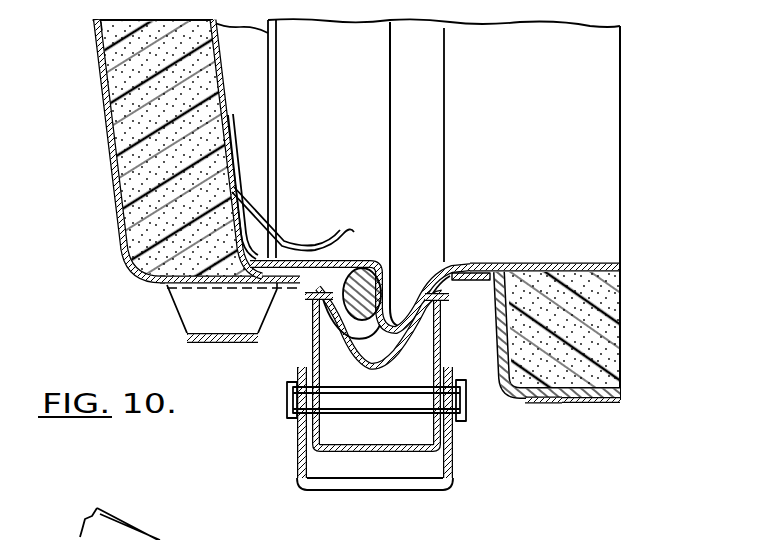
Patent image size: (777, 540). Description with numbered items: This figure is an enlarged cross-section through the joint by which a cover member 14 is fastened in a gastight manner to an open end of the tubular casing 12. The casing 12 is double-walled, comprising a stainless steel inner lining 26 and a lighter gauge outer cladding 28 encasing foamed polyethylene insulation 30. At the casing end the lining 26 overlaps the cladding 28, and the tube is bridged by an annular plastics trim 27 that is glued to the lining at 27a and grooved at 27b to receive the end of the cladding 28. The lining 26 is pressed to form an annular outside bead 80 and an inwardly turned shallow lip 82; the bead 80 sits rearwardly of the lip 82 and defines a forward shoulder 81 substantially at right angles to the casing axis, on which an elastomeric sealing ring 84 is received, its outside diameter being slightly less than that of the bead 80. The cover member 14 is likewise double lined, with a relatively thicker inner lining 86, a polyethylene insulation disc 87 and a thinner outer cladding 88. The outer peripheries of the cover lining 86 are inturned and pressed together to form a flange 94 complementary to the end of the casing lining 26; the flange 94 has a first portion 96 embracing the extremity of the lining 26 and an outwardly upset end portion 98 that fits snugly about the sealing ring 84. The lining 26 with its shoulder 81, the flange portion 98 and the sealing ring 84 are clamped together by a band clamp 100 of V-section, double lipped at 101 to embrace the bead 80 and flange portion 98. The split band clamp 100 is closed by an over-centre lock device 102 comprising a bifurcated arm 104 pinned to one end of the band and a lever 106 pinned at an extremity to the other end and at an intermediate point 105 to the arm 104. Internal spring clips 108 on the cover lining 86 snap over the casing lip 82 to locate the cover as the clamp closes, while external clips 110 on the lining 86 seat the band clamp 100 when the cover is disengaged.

The casing 12 is at (609, 198).
The cover member 14 is at (98, 181).
The inner lining 26 is at (530, 262).
The annular plastics trim 27 is at (513, 397).
The glued portion of trim 27a is at (513, 231).
The groove of trim 27b is at (555, 404).
The outer cladding 28 is at (612, 403).
The foamed polyethylene insulation 30 is at (557, 282).
The annular outside bead 80 is at (408, 302).
The forward shoulder 81 is at (398, 300).
The inwardly turned shallow lip 82 is at (263, 248).
The elastomeric sealing ring 84 is at (352, 278).
The inner lining of cover member 86 is at (213, 42).
The polyethylene insulation disc 87 is at (128, 81).
The outer cladding of cover member 88 is at (105, 110).
The flange 94 is at (365, 372).
The first portion of flange 96 is at (283, 302).
The outwardly upset end portion 98 is at (330, 300).
The band clamp 100 is at (441, 330).
The double lips of band clamp 101 is at (452, 262).
The over-centre lock device 102 is at (324, 492).
The bifurcated arm 104 is at (452, 468).
The intermediate point 105 is at (372, 402).
The lever 106 is at (421, 452).
The internal spring clips 108 is at (243, 222).
The external clips 110 is at (180, 303).